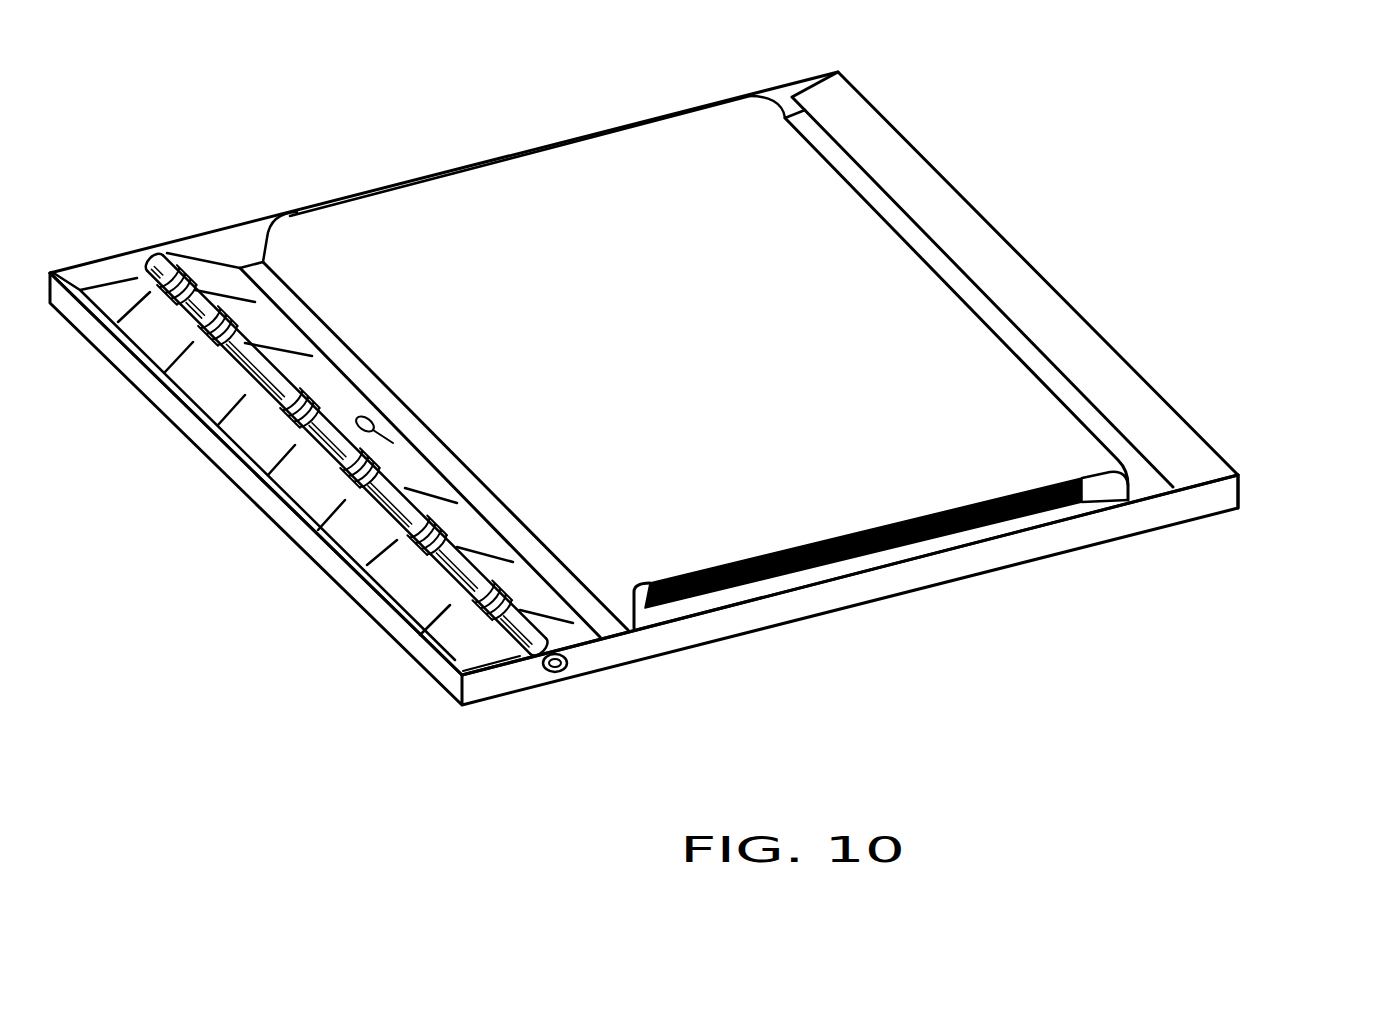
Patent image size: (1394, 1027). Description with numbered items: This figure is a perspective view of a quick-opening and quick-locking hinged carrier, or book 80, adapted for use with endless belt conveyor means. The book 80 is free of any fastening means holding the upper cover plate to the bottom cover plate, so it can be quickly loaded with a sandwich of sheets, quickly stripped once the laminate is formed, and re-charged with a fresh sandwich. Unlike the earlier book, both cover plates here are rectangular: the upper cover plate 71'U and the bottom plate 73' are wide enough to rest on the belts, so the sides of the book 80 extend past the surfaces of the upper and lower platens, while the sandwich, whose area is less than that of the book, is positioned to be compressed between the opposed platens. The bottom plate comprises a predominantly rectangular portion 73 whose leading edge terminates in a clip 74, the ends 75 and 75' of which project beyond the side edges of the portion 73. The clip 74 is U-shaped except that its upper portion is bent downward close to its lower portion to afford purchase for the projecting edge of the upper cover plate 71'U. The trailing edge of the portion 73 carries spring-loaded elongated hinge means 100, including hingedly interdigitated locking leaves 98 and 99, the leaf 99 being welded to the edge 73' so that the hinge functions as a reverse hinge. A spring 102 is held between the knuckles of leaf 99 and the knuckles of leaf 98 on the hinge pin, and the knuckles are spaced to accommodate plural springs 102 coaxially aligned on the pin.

The upper cover plate 71'U is at (644, 388).
The rectangular portion of bottom cover plate 73 is at (881, 558).
The bottom plate edge 73' is at (850, 599).
The clip 74 is at (1040, 270).
The clip end 75 is at (1316, 480).
The clip end 75' is at (855, 69).
The book 80 is at (363, 617).
The locking leaf 98 is at (210, 262).
The locking leaf 99 is at (100, 285).
The hinge means 100 is at (413, 465).
The spring 102 is at (512, 593).